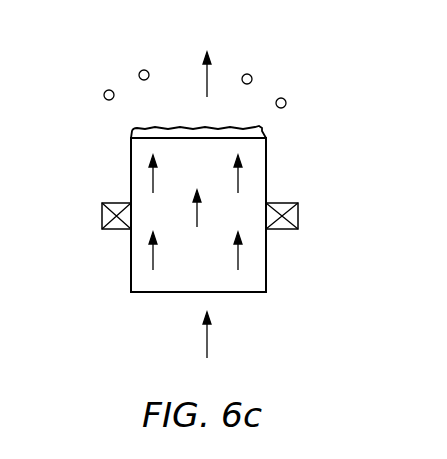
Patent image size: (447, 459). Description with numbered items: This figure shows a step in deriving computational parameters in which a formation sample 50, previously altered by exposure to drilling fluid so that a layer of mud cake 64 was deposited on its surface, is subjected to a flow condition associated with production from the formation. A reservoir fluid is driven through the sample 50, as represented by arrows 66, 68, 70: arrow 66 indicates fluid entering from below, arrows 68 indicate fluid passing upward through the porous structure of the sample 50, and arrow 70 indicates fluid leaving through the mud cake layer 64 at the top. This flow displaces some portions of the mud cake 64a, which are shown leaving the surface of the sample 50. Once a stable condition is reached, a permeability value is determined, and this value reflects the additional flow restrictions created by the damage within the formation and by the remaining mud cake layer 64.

The formation sample 50 is at (131, 270).
The mud cake layer 64 is at (259, 128).
The displaced portions of mud cake 64a is at (139, 75).
The reservoir fluid flow arrow 66 is at (207, 340).
The reservoir fluid flow arrows 68 is at (240, 181).
The reservoir fluid flow arrow 70 is at (207, 87).